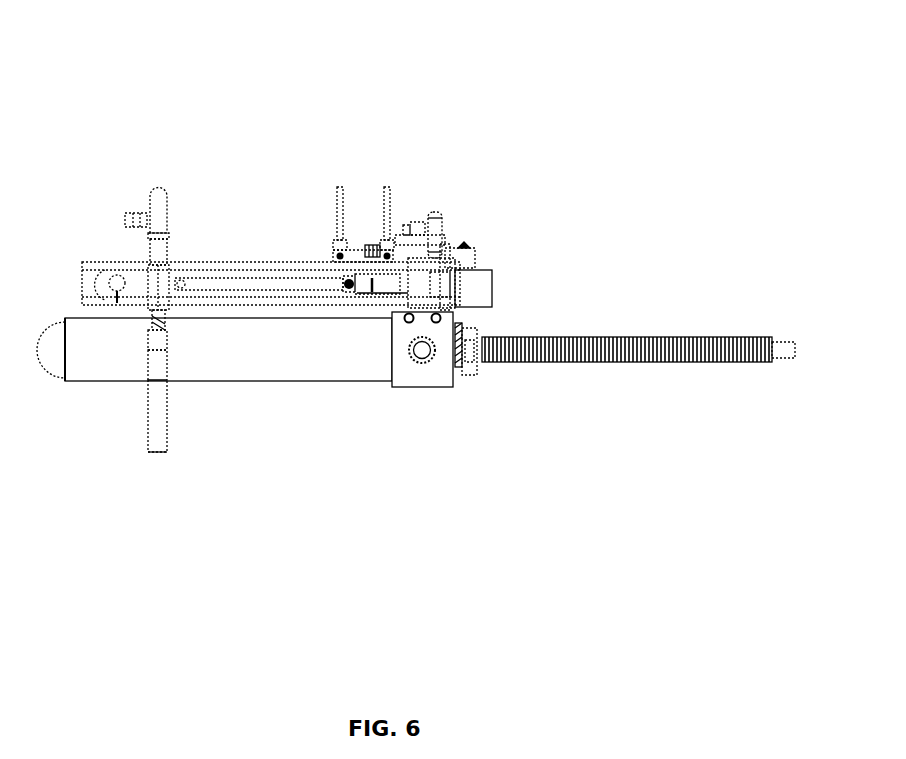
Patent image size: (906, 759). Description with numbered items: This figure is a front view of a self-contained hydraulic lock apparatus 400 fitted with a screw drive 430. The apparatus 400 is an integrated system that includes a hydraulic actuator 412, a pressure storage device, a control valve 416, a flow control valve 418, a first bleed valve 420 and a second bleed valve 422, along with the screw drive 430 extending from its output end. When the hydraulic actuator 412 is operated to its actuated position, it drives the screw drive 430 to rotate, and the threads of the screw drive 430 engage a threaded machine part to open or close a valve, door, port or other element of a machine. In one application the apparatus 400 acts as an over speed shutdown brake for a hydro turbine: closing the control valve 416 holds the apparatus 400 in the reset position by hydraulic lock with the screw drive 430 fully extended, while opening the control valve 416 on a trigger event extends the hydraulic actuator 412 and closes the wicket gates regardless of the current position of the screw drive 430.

The hydraulic lock apparatus 400 is at (128, 133).
The hydraulic actuator 412 is at (203, 266).
The control valve 416 is at (436, 280).
The flow control valve 418 is at (372, 257).
The first bleed valve 420 is at (130, 215).
The second bleed valve 422 is at (404, 223).
The screw drive 430 is at (613, 338).